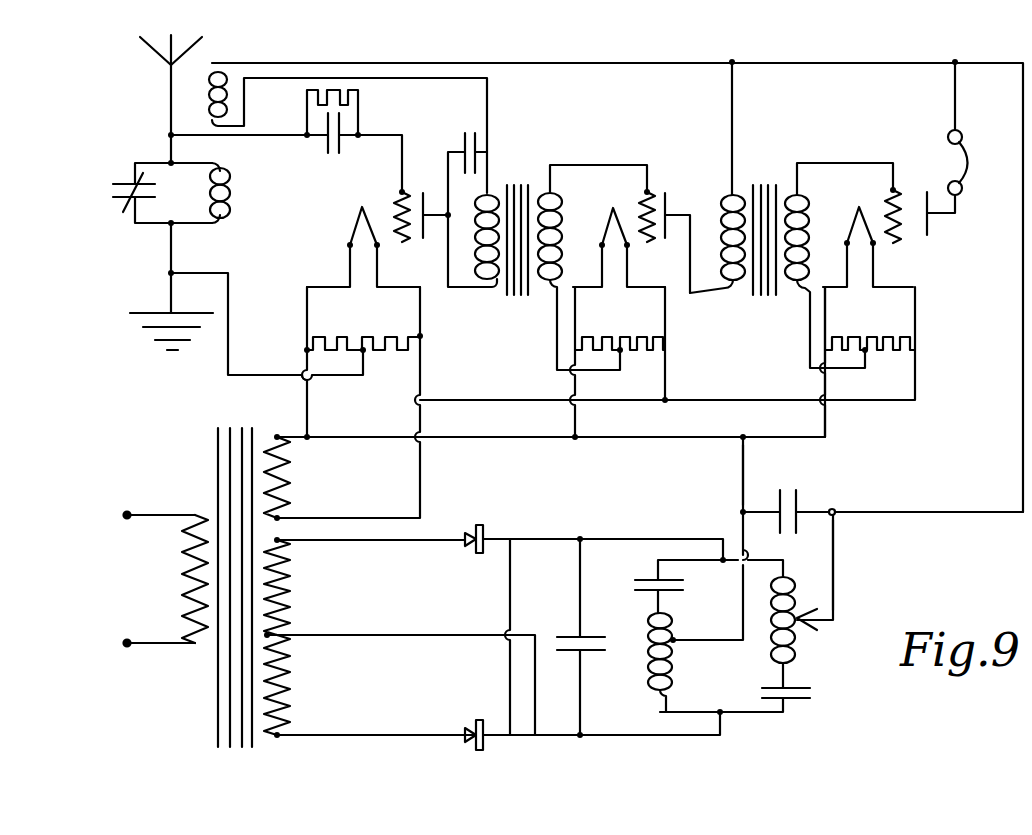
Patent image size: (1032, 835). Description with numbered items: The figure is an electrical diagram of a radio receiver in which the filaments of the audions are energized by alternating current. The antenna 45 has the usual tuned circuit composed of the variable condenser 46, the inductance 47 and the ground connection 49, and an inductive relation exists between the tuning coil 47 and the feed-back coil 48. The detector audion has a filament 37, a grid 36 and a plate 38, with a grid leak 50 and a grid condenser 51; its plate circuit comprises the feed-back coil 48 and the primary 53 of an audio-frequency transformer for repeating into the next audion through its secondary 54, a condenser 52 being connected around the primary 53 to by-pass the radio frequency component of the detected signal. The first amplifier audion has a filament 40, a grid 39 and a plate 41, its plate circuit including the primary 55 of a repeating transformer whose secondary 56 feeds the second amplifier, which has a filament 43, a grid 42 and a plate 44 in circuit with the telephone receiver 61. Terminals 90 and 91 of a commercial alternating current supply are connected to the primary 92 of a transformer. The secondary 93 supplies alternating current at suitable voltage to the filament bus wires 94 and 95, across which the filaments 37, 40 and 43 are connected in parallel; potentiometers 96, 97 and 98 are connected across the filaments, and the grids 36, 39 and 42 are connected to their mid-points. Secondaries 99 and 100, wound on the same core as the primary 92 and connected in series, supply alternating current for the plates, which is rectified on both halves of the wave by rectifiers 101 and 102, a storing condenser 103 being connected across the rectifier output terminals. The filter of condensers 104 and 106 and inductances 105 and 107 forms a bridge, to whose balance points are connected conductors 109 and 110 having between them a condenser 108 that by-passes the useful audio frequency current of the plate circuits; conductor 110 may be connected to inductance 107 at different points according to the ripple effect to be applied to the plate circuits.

The grid 36 is at (397, 210).
The audion filament 37 is at (345, 235).
The plate 38 is at (418, 200).
The grid 39 is at (650, 198).
The audion filament 40 is at (602, 231).
The plate 41 is at (668, 212).
The grid 42 is at (898, 205).
The audion filament 43 is at (849, 236).
The plate 44 is at (930, 226).
The antenna 45 is at (152, 63).
The variable condenser 46 is at (136, 185).
The inductance 47 is at (233, 209).
The feed-back coil 48 is at (208, 116).
The ground connection 49 is at (158, 311).
The grid leak 50 is at (358, 101).
The grid condenser 51 is at (324, 148).
The condenser 52 is at (462, 139).
The primary 53 is at (490, 194).
The secondary 54 is at (557, 197).
The primary 55 is at (726, 198).
The secondary 56 is at (800, 198).
The telephone receiver 61 is at (903, 118).
The terminal 90 is at (124, 518).
The terminal 91 is at (124, 646).
The primary 92 is at (183, 588).
The secondary 93 is at (284, 491).
The filament bus wire 94 is at (510, 385).
The filament bus wire 95 is at (527, 441).
The potentiometer 96 is at (373, 336).
The potentiometer 97 is at (618, 337).
The potentiometer 98 is at (870, 334).
The secondary 99 is at (284, 601).
The secondary 100 is at (284, 695).
The rectifier 101 is at (487, 538).
The rectifier 102 is at (485, 749).
The storing condenser 103 is at (566, 634).
The condenser 104 is at (645, 580).
The inductance 105 is at (647, 678).
The condenser 106 is at (791, 700).
The inductance 107 is at (799, 661).
The condenser 108 is at (800, 500).
The conductor 109 is at (740, 494).
The conductor 110 is at (836, 566).